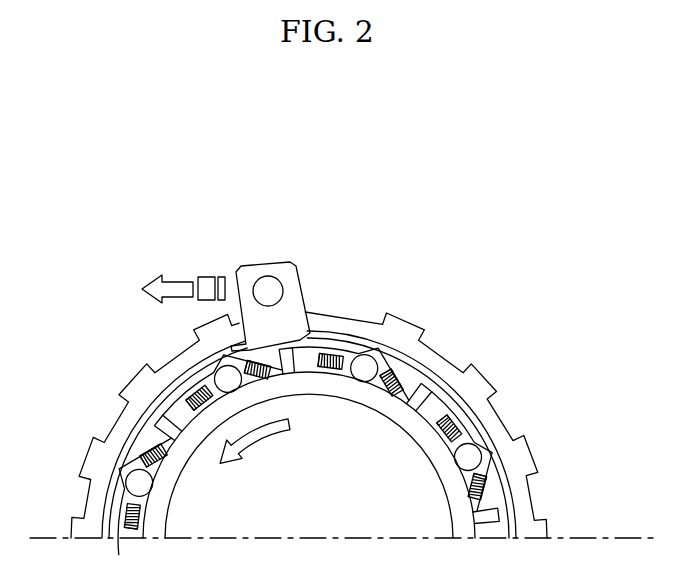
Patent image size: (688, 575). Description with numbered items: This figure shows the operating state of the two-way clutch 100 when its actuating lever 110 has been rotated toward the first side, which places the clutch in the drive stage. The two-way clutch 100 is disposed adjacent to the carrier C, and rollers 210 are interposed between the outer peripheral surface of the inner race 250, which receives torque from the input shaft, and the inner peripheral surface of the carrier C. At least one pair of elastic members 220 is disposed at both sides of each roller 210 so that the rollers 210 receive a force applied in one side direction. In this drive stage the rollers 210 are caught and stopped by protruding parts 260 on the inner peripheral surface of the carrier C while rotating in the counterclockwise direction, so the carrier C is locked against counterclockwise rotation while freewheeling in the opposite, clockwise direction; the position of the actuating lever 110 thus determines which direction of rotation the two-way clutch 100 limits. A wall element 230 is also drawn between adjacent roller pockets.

The two-way clutch 100 is at (346, 318).
The actuating lever 110 is at (274, 268).
The roller 210 is at (366, 360).
The elastic member 220 is at (389, 358).
The cam pocket wall 230 is at (410, 387).
The inner race 250 is at (455, 500).
The protruding part 260 is at (140, 435).
The carrier C is at (523, 460).